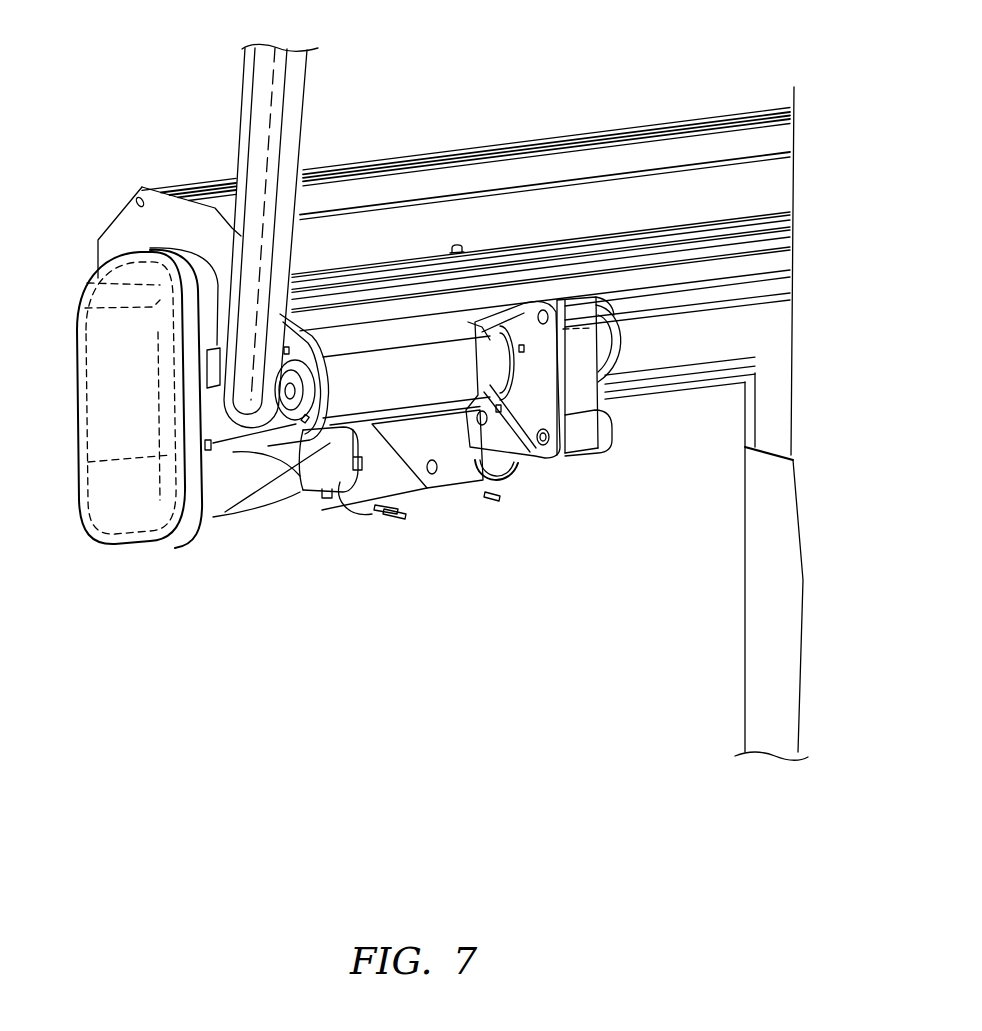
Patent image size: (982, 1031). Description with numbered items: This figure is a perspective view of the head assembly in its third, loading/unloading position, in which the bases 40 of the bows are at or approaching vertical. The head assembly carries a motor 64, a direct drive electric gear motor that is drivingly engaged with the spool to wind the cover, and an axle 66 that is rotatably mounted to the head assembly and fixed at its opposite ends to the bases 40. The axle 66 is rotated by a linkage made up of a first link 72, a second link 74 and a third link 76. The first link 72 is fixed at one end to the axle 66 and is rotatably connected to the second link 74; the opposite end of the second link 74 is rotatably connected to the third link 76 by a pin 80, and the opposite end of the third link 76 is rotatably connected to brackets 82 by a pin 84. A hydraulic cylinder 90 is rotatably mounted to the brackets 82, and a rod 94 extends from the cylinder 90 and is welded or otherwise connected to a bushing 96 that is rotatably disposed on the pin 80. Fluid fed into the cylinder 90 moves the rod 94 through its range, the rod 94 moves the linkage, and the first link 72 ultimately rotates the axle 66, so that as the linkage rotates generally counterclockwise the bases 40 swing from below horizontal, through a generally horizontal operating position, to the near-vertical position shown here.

The base 40 is at (256, 104).
The motor 64 is at (90, 408).
The axle 66 is at (775, 332).
The first link 72 is at (575, 342).
The second link 74 is at (586, 398).
The third link 76 is at (537, 445).
The pin 80 is at (548, 444).
The brackets 82 is at (416, 455).
The pin 84 is at (478, 424).
The hydraulic cylinder 90 is at (352, 497).
The rod 94 is at (515, 462).
The bushing 96 is at (586, 448).